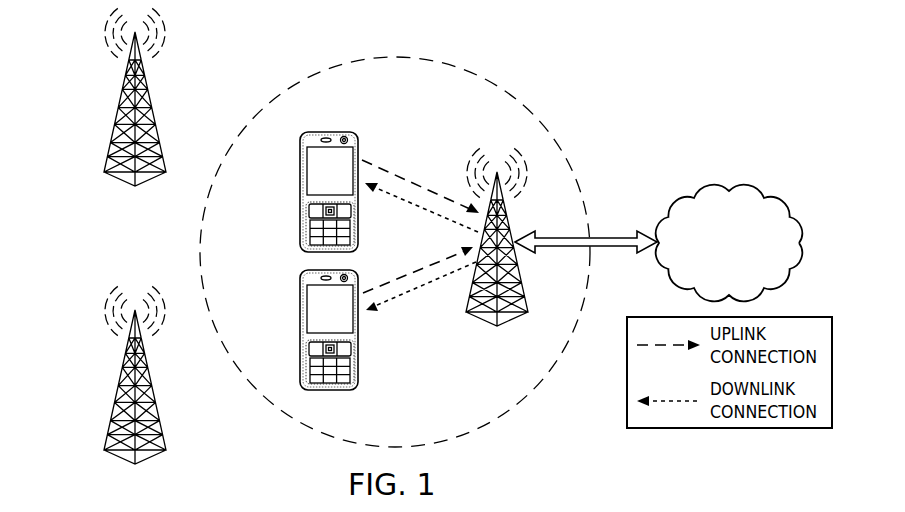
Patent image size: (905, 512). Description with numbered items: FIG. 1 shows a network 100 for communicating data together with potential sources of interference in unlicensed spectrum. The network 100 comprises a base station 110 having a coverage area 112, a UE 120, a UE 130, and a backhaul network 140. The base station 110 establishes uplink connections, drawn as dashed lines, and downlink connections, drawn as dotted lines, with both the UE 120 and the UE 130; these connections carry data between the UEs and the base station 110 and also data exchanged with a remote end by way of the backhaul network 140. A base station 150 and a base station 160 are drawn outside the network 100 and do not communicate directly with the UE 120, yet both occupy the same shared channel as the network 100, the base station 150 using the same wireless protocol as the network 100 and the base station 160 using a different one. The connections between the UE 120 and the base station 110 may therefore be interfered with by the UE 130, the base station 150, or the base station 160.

The network 100 is at (664, 96).
The base station 110 is at (510, 319).
The coverage area 112 is at (307, 79).
The UE 120 is at (300, 192).
The UE 130 is at (300, 333).
The backhaul network 140 is at (733, 187).
The base station 150 is at (120, 459).
The base station 160 is at (120, 182).